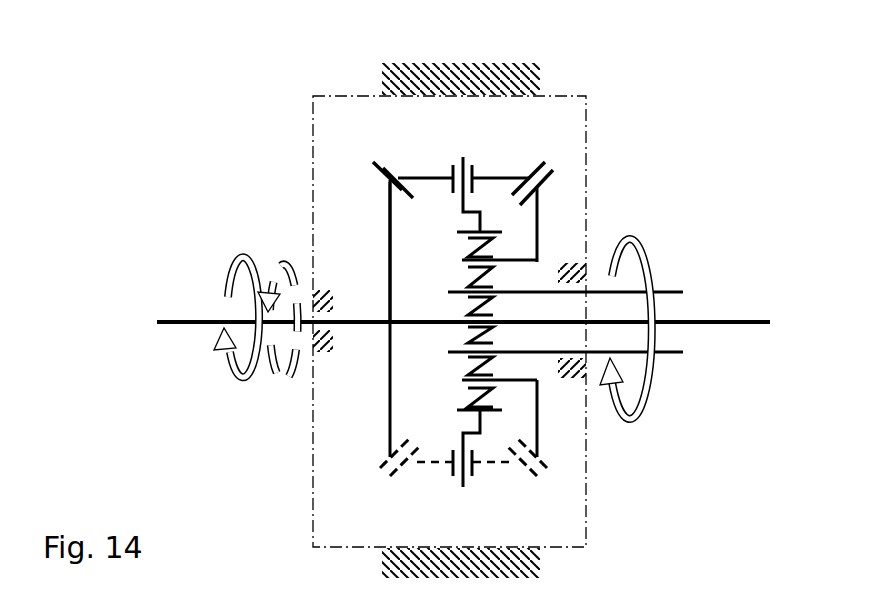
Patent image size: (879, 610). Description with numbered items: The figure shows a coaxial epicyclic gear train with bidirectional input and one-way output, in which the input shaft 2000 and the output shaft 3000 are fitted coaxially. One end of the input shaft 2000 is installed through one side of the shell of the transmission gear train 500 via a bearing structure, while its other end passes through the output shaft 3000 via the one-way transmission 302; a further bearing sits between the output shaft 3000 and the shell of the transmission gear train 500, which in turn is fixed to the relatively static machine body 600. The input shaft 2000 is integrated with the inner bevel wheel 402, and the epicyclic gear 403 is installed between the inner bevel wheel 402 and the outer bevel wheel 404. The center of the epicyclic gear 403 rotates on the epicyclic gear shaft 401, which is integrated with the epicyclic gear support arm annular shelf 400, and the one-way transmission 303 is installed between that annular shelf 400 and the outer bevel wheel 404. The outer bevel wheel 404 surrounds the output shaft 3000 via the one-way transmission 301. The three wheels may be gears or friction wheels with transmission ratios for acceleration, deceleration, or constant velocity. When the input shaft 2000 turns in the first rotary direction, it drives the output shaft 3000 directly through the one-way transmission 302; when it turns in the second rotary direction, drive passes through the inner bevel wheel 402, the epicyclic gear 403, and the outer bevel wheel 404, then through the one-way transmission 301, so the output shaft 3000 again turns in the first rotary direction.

The input shaft 2000 is at (198, 320).
The output shaft 3000 is at (668, 292).
The shell of the transmission gear train 500 is at (313, 178).
The machine body 600 is at (460, 83).
The one-way transmission 301 is at (470, 360).
The one-way transmission 302 is at (470, 307).
The one-way transmission 303 is at (470, 253).
The epicyclic gear support arm annular shelf 400 is at (482, 422).
The epicyclic gear shaft 401 is at (465, 157).
The inner bevel wheel 402 is at (375, 182).
The epicyclic gear 403 is at (393, 160).
The outer bevel wheel 404 is at (543, 185).